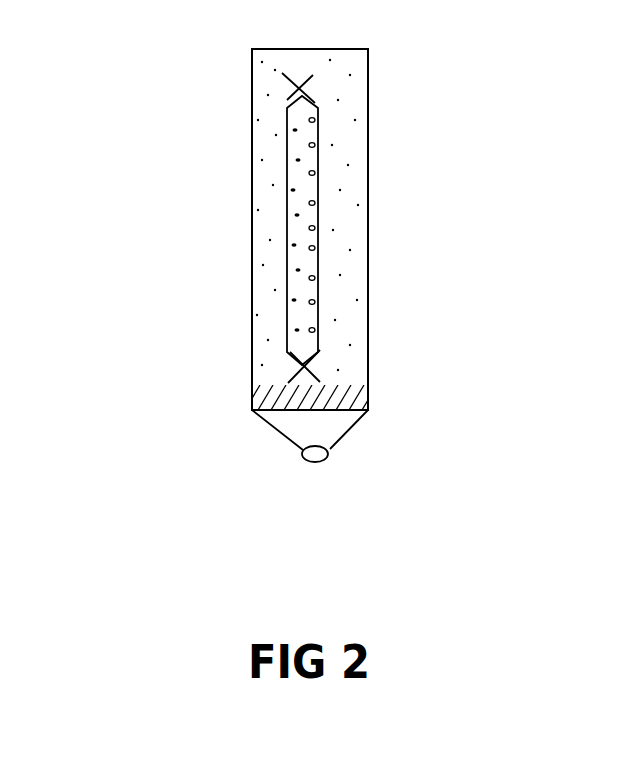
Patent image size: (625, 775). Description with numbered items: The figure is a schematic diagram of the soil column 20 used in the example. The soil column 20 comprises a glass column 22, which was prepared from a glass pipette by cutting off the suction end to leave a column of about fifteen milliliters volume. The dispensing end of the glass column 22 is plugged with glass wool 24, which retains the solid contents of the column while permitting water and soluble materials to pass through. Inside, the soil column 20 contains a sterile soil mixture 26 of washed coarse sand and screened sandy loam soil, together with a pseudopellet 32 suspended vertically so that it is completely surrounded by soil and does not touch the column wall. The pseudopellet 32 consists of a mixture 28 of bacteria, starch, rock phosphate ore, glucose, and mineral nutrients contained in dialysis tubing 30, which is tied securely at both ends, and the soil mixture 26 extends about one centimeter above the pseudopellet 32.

The soil column 20 is at (481, 207).
The glass column 22 is at (370, 340).
The glass wool 24 is at (355, 399).
The soil mixture 26 is at (343, 285).
The mixture 28 is at (288, 227).
The dialysis tubing 30 is at (310, 74).
The pseudopellet 32 is at (273, 170).